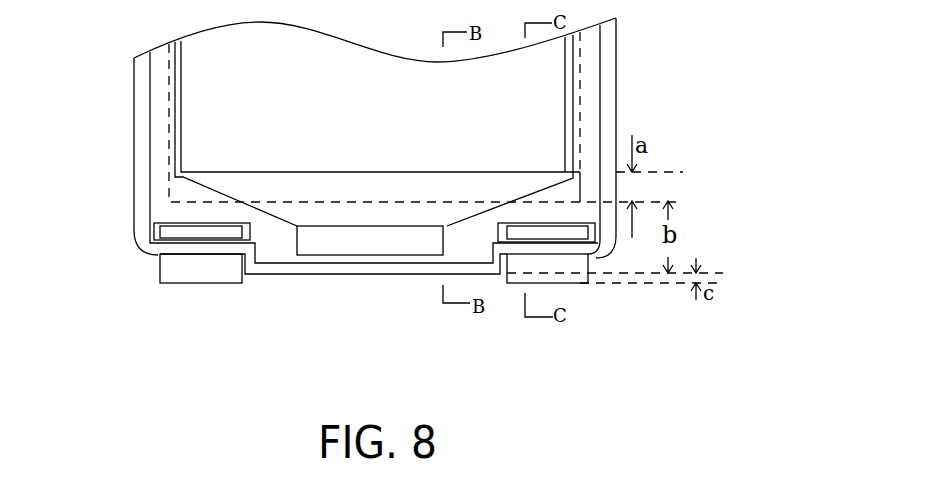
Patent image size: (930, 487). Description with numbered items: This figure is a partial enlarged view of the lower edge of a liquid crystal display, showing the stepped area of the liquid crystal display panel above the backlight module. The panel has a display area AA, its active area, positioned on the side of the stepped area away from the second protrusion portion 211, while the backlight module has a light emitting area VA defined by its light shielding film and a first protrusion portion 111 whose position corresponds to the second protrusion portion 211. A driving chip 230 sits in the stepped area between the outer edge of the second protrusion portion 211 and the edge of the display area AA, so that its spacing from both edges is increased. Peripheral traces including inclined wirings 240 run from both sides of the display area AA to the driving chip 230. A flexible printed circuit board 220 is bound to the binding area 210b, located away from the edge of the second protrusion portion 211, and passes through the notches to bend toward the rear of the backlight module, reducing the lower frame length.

The first protrusion portion 111 is at (272, 274).
The second protrusion portion 211 is at (395, 265).
The driving chip 230 is at (327, 243).
The inclined wirings 240 is at (187, 183).
The binding area 210b is at (187, 230).
The flexible printed circuit board 220 is at (585, 275).
The display area AA is at (565, 70).
The light emitting area VA is at (580, 89).